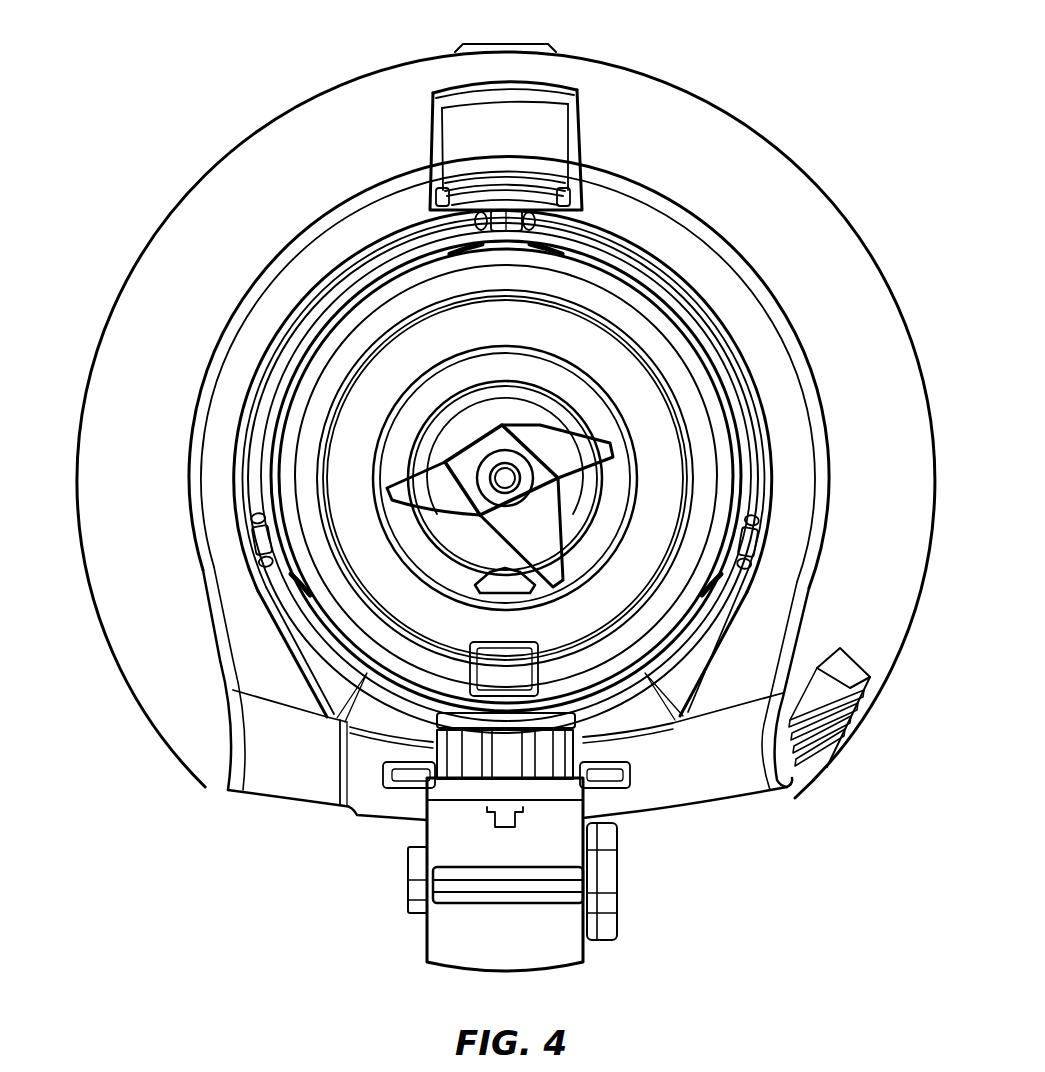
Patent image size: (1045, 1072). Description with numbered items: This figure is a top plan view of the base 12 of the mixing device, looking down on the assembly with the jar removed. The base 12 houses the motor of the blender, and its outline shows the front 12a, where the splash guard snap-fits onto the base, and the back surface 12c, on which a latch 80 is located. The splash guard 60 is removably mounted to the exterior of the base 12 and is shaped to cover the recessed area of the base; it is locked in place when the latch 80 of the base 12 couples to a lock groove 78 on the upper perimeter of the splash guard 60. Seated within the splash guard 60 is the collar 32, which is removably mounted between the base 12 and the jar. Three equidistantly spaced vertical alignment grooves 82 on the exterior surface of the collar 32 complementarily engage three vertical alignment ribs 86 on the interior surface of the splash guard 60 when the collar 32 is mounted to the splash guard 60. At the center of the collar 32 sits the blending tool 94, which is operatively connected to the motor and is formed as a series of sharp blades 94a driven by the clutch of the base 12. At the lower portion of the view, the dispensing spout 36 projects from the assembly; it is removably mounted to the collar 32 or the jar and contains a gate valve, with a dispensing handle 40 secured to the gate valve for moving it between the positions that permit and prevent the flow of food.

The base 12 is at (118, 338).
The front 12a is at (207, 776).
The back surface 12c is at (603, 60).
The collar 32 is at (763, 390).
The dispensing spout 36 is at (638, 917).
The dispensing handle 40 is at (463, 897).
The splash guard 60 is at (693, 782).
The lock groove 78 is at (405, 195).
The latch 80 is at (555, 136).
The vertical alignment grooves 82 is at (431, 173).
The vertical alignment ribs 86 is at (583, 163).
The blending tool 94 is at (468, 430).
The sharp blades 94a is at (570, 452).